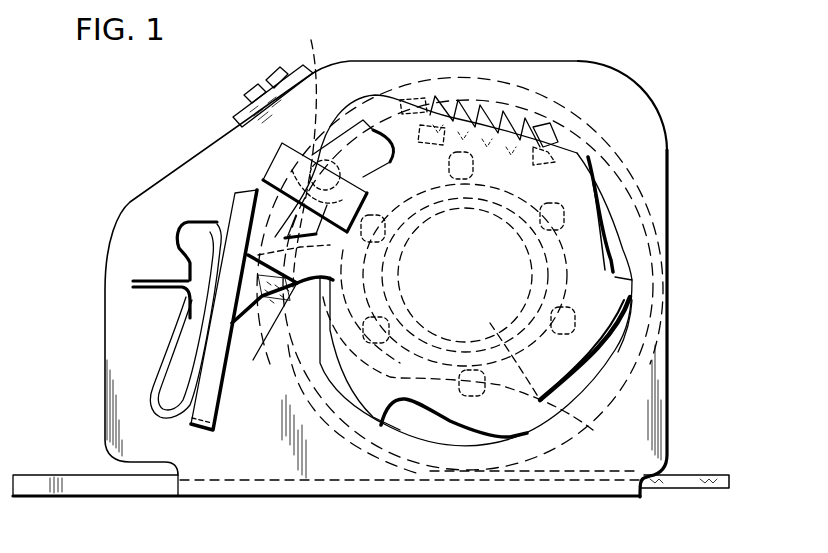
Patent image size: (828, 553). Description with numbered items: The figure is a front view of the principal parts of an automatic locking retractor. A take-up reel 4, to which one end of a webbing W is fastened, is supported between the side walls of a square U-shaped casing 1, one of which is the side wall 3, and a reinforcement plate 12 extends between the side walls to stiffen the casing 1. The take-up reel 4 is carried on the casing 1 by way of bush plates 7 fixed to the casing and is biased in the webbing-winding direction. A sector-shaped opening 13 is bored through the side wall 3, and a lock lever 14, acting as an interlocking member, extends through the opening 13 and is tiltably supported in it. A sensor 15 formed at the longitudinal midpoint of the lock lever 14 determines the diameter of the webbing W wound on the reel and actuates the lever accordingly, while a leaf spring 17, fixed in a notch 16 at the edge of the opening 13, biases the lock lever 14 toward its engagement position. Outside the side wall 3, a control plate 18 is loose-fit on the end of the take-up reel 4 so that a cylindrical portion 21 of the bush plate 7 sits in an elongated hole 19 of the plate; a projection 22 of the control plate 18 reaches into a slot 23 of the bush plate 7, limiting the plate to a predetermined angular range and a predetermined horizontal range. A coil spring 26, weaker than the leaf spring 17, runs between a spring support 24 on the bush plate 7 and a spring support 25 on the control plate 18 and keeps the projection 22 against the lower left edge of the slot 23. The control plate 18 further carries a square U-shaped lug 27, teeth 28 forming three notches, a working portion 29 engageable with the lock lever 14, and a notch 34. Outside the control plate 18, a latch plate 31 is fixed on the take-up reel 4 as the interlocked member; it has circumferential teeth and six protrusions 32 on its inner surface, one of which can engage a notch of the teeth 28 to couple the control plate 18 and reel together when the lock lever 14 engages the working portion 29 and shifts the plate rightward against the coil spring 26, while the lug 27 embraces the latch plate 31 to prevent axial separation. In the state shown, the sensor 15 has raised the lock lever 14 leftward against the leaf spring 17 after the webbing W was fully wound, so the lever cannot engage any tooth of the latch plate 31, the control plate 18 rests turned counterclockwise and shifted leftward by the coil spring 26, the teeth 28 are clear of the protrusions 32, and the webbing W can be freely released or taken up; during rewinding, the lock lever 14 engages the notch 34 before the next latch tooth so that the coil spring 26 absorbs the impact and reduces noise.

The casing 1 is at (87, 498).
The side wall 3 is at (590, 83).
The take-up reel 4 is at (546, 406).
The bush plate 7 is at (625, 262).
The reinforcement plate 12 is at (288, 78).
The sector-shaped opening 13 is at (220, 390).
The lock lever 14 is at (233, 215).
The sensor 15 is at (247, 325).
The notch 16 is at (183, 292).
The leaf spring 17 is at (153, 383).
The control plate 18 is at (540, 400).
The elongated hole 19 is at (553, 263).
The cylindrical portion 21 is at (543, 287).
The projection 22 is at (308, 149).
The slot 23 is at (347, 120).
The spring support 24 is at (565, 135).
The spring support 25 is at (417, 103).
The coil spring 26 is at (497, 122).
The lug 27 is at (270, 165).
The teeth 28 is at (268, 316).
The working portion 29 is at (280, 215).
The latch plate 31 is at (625, 302).
The protrusions 32 is at (458, 291).
The notch 34 is at (215, 231).
The webbing W is at (697, 475).